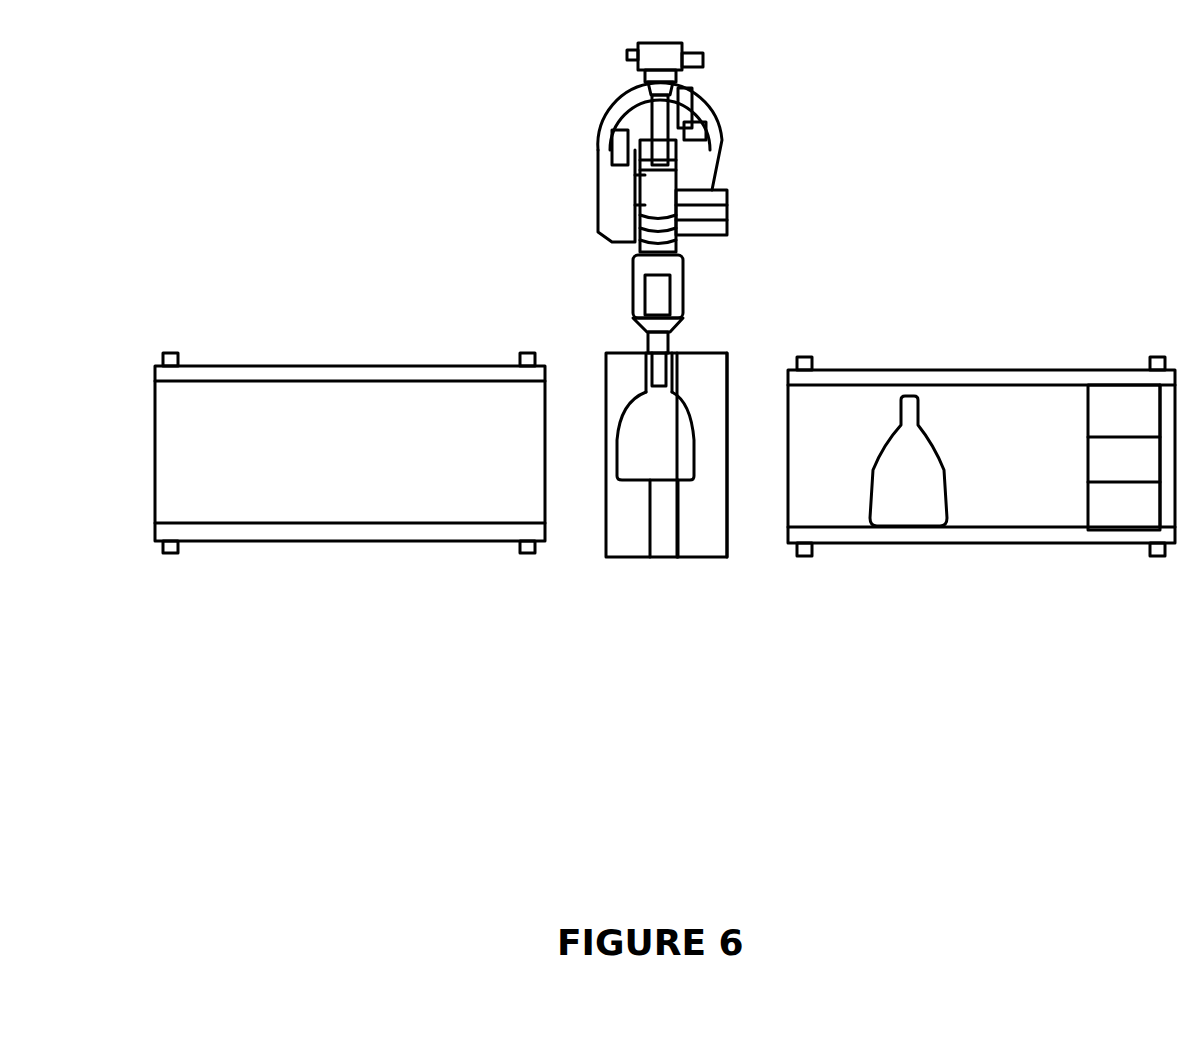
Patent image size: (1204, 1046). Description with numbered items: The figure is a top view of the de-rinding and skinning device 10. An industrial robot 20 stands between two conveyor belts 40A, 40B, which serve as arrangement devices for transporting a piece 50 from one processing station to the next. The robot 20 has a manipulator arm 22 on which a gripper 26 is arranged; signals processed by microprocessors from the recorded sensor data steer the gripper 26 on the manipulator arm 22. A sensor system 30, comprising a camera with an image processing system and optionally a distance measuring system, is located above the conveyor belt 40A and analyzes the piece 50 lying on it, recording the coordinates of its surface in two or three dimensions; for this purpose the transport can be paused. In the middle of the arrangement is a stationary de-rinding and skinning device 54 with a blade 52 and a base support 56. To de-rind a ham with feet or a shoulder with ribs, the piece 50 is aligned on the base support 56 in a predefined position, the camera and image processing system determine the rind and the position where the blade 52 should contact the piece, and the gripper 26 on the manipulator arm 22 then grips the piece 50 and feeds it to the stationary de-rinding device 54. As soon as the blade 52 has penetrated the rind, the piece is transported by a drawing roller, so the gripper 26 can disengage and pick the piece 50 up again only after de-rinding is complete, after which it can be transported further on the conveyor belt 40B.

The blow molding system 10 is at (820, 290).
The industrial robot 20 is at (718, 98).
The manipulator arm 22 is at (632, 300).
The gripper 26 is at (640, 385).
The sensor system 30 is at (1120, 498).
The conveyor belt 40A is at (981, 456).
The conveyor belt 40B is at (350, 453).
The piece 50 is at (792, 461).
The blade 52 is at (670, 515).
The stationary de-rinding and skinning device 54 is at (657, 553).
The base support 56 is at (712, 522).